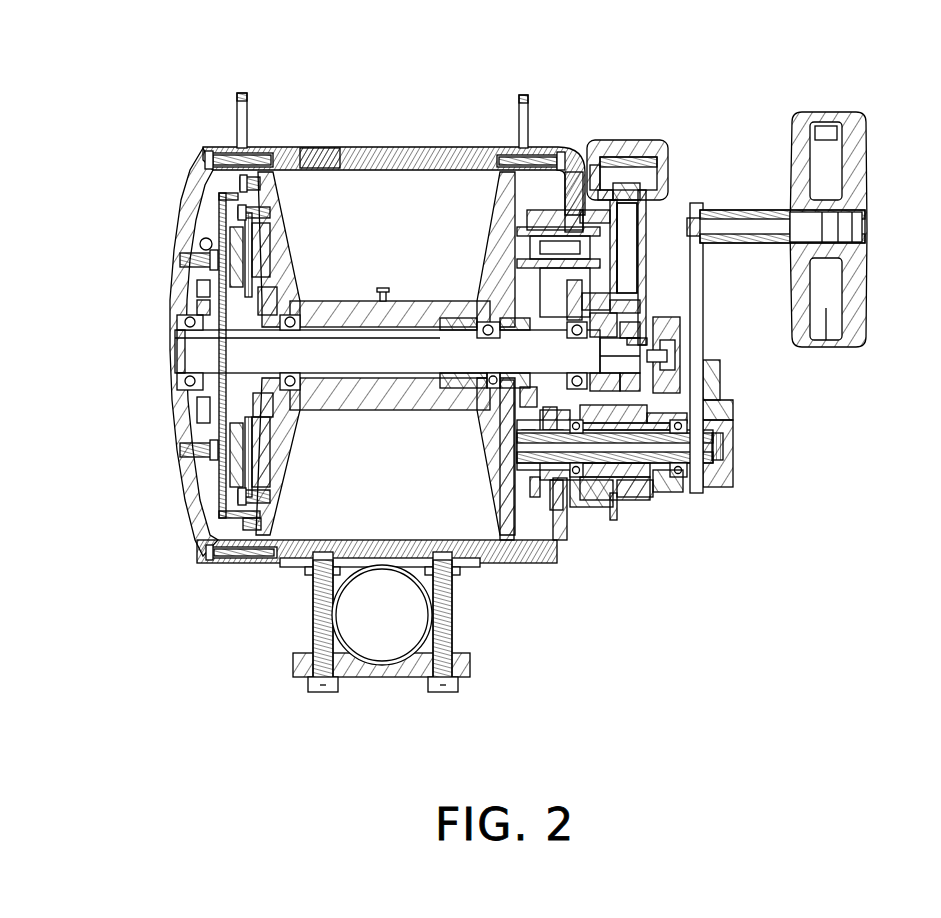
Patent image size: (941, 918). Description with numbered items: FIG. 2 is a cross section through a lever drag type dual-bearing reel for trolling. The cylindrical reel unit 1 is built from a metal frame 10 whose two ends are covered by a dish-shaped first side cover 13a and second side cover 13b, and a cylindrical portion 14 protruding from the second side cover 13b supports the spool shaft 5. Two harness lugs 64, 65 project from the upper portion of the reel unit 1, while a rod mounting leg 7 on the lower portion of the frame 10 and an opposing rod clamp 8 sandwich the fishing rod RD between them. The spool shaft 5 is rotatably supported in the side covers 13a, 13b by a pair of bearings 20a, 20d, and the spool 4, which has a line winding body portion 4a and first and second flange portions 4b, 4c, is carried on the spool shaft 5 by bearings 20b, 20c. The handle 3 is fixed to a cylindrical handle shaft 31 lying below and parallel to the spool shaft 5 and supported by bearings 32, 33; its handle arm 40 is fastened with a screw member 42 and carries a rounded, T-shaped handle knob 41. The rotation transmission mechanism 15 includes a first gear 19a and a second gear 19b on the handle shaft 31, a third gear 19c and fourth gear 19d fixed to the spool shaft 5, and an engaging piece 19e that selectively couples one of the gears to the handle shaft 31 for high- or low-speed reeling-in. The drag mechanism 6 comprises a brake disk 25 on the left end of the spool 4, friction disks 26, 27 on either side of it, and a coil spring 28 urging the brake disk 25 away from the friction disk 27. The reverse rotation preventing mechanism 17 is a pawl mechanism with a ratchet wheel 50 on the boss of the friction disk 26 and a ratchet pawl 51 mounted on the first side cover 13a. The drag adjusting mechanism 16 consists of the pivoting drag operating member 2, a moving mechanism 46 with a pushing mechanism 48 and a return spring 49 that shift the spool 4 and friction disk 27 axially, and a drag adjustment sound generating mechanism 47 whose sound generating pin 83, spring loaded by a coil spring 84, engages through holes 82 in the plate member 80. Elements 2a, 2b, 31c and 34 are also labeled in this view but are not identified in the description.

The reel unit 1 is at (458, 84).
The drag operating member 2 is at (766, 271).
The handle arm 2a is at (637, 141).
The handle arm mounting portion 2b is at (648, 243).
The handle 3 is at (743, 208).
The spool 4 is at (385, 321).
The line winding body portion 4a is at (384, 290).
The first flange portion 4b is at (265, 200).
The second flange portion 4c is at (498, 182).
The spool shaft 5 is at (345, 345).
The drag mechanism 6 is at (347, 310).
The rod mounting leg 7 is at (302, 564).
The rod clamp 8 is at (295, 664).
The fishing rod RD is at (337, 607).
The frame 10 is at (345, 148).
The first side cover 13a is at (186, 212).
The second side cover 13b is at (540, 146).
The cylindrical portion 14 is at (650, 312).
The rotation transmission mechanism 15 is at (540, 548).
The drag adjusting mechanism 16 is at (699, 254).
The reverse rotation preventing mechanism 17 is at (193, 426).
The first gear 19a is at (543, 522).
The second gear 19b is at (533, 504).
The third gear 19c is at (587, 356).
The fourth gear 19d is at (512, 296).
The engaging piece 19e is at (530, 489).
The bearing 20a is at (185, 321).
The bearing 20b is at (292, 335).
The bearing 20c is at (489, 342).
The bearing 20d is at (592, 508).
The brake disk 25 is at (240, 496).
The friction disk 26 is at (258, 402).
The friction disk 27 is at (268, 464).
The coil spring 28 is at (220, 498).
The handle shaft 31 is at (630, 498).
The drag disk 31c is at (610, 508).
The bearing 32 is at (548, 556).
The bearing 33 is at (681, 485).
The pinion gear 34 is at (500, 353).
The handle arm 40 is at (720, 380).
The handle knob 41 is at (860, 160).
The screw member 42 is at (733, 413).
The moving mechanism 46 is at (670, 350).
The drag adjustment sound generating mechanism 47 is at (615, 140).
The pushing mechanism 48 is at (655, 322).
The return spring 49 is at (200, 357).
The ratchet wheel 50 is at (198, 300).
The ratchet pawl 51 is at (198, 266).
The harness lug 64 is at (248, 96).
The harness lug 65 is at (528, 98).
The plate member 80 is at (617, 141).
The through holes 82 is at (667, 175).
The sound generating pin 83 is at (605, 141).
The coil spring 84 is at (590, 150).